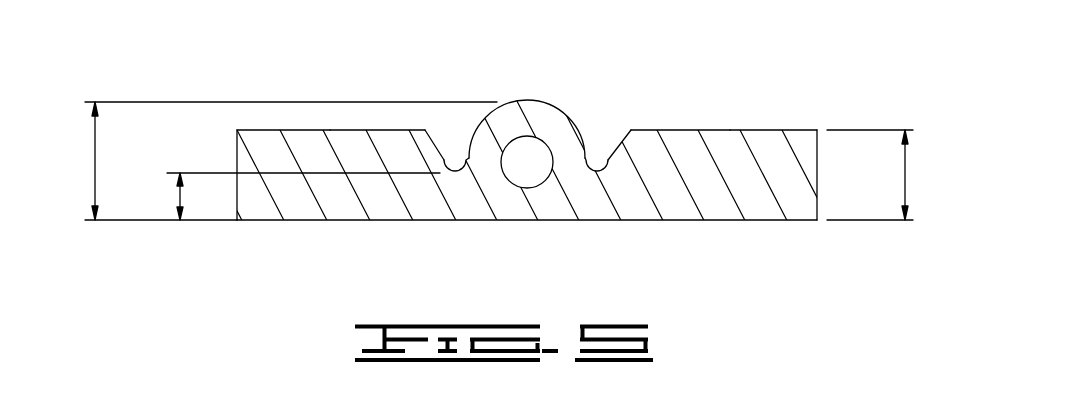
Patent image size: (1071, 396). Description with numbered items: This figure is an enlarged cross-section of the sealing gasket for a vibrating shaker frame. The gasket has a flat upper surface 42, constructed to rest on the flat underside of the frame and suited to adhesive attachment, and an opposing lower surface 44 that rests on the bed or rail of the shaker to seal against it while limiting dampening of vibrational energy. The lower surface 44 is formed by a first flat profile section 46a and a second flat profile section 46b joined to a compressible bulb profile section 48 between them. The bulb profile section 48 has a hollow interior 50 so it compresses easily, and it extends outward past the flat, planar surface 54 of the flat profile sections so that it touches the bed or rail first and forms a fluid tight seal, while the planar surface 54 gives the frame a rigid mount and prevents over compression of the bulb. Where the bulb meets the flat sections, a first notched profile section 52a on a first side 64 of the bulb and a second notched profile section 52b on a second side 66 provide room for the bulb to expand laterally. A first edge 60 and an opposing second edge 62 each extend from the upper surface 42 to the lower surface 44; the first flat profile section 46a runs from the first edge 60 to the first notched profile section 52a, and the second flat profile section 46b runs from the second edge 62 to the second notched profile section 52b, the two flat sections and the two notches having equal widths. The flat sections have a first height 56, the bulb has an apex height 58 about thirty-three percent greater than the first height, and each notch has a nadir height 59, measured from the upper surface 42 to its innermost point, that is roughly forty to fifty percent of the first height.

The upper surface 42 is at (733, 221).
The lower surface 44 is at (678, 130).
The first flat profile section 46a is at (267, 130).
The second flat profile section 46b is at (771, 130).
The bulb profile section 48 is at (546, 101).
The hollow interior 50 is at (534, 180).
The first notched profile section 52a is at (438, 152).
The second notched profile section 52b is at (622, 160).
The planar surface 54 is at (370, 130).
The first height 56 is at (906, 172).
The apex height 58 is at (95, 157).
The nadir height 59 is at (180, 198).
The first edge 60 is at (238, 140).
The second edge 62 is at (818, 185).
The first side 64 is at (460, 134).
The second side 66 is at (600, 134).